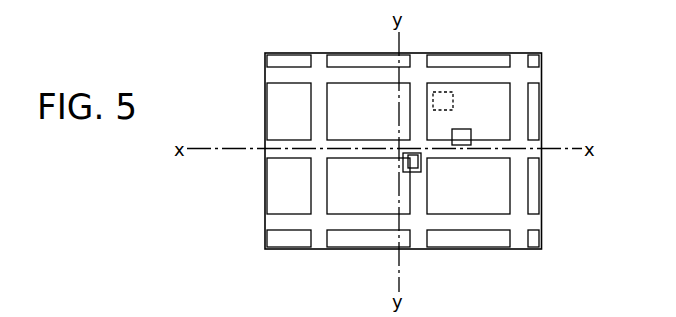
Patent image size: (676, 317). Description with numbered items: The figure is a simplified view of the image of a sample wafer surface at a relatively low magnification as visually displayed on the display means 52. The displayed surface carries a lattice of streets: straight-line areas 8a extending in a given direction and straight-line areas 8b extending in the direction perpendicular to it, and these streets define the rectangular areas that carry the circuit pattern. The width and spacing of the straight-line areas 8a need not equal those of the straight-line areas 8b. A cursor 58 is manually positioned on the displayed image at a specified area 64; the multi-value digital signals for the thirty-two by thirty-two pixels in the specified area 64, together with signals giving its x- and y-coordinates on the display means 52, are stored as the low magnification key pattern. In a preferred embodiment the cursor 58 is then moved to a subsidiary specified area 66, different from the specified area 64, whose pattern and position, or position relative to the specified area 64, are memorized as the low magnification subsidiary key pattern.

The display means 52 is at (543, 74).
The straight-line areas extending in a given direction 8a is at (368, 80).
The straight-line areas extending in a perpendicular direction 8b is at (312, 189).
The cursor 58 is at (448, 90).
The specified area 64 is at (417, 172).
The subsidiary specified area 66 is at (462, 129).